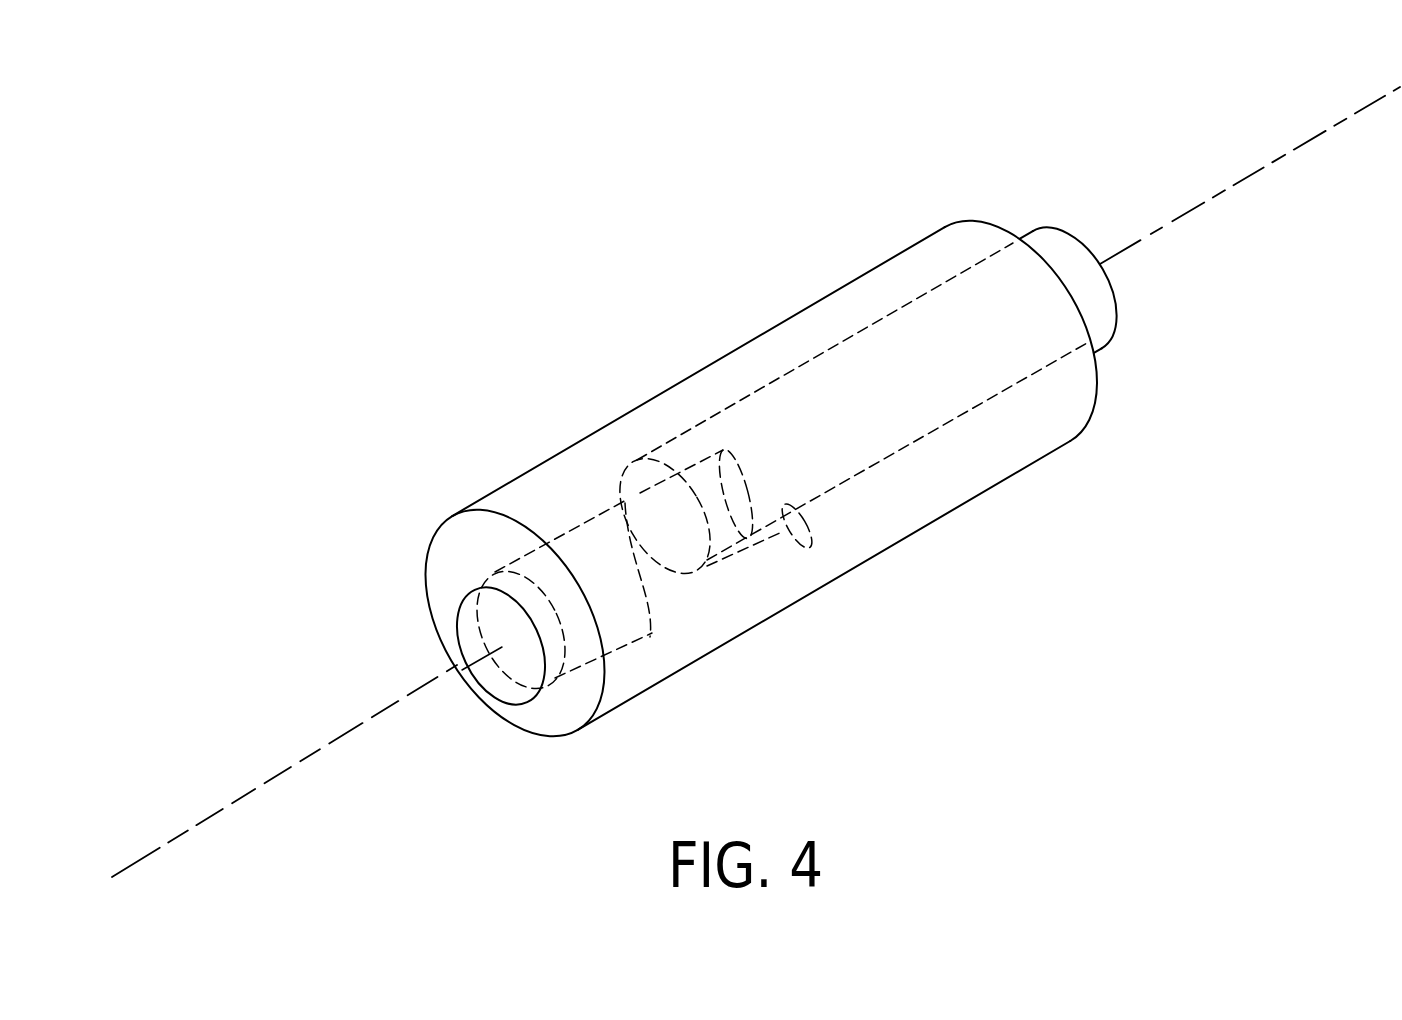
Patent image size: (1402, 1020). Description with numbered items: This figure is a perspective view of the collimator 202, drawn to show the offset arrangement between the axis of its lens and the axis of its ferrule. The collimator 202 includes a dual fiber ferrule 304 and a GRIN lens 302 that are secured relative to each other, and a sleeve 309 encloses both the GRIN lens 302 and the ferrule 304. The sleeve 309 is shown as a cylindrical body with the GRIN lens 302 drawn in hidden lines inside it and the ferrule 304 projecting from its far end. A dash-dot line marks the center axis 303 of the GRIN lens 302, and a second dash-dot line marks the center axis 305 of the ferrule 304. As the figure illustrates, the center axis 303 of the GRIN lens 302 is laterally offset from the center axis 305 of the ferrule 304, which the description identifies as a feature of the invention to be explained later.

The collimator 202 is at (678, 272).
The GRIN lens 302 is at (550, 692).
The center axis of the GRIN lens 303 is at (300, 760).
The dual fiber ferrule 304 is at (1058, 242).
The center axis of the ferrule 305 is at (1262, 197).
The sleeve 309 is at (522, 722).